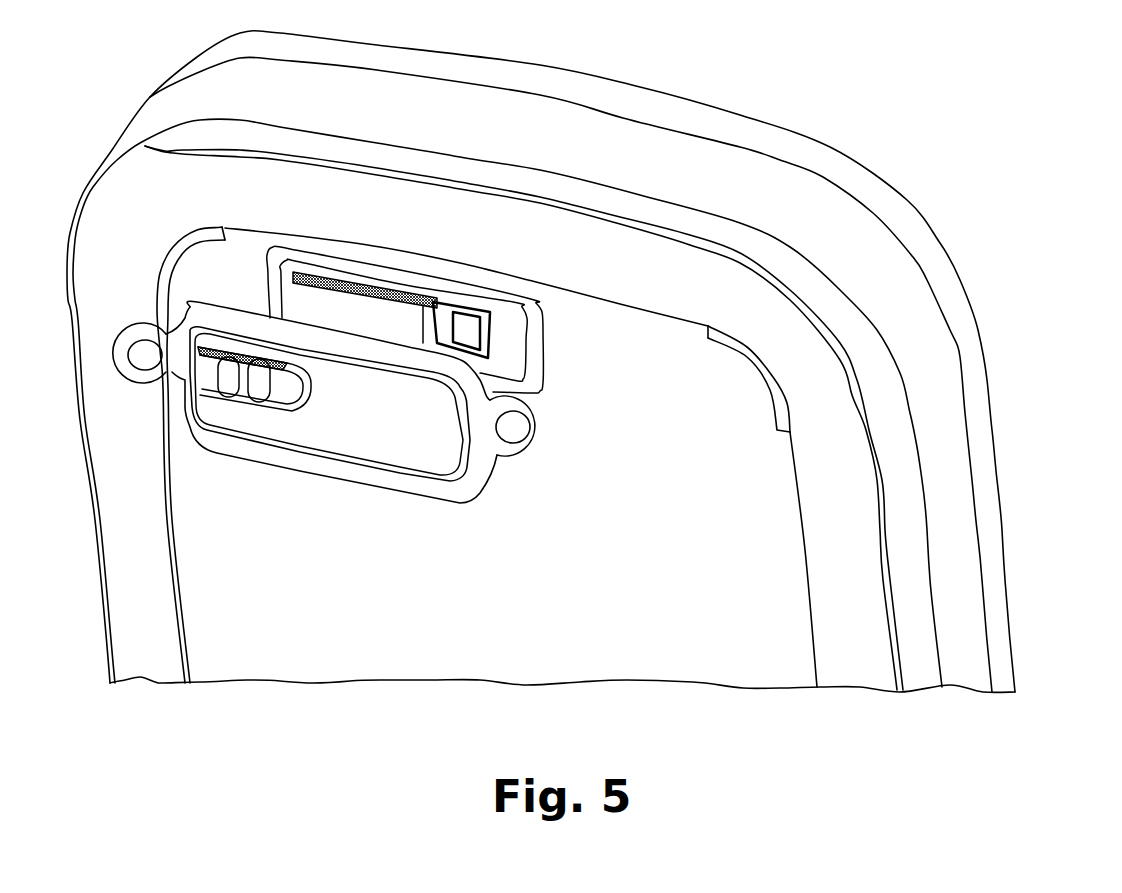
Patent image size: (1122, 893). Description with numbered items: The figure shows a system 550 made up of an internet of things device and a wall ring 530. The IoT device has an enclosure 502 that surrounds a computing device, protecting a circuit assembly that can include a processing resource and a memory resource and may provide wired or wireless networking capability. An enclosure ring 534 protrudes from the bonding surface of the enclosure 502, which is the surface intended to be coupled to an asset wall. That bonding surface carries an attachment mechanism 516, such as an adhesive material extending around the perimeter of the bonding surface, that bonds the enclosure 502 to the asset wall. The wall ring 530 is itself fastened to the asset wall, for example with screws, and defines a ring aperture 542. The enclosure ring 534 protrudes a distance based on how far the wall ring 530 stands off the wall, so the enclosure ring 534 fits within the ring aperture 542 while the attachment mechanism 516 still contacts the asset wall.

The enclosure 502 is at (745, 653).
The attachment mechanism 516 is at (990, 443).
The wall ring 530 is at (475, 488).
The enclosure ring 534 is at (527, 318).
The ring aperture 542 is at (390, 430).
The system 550 is at (868, 74).